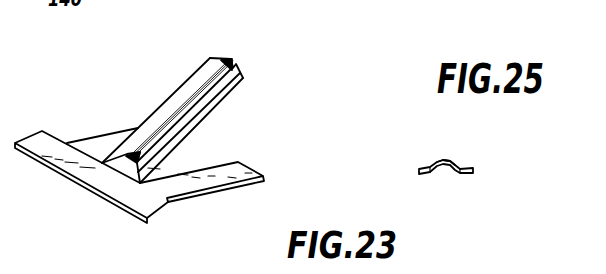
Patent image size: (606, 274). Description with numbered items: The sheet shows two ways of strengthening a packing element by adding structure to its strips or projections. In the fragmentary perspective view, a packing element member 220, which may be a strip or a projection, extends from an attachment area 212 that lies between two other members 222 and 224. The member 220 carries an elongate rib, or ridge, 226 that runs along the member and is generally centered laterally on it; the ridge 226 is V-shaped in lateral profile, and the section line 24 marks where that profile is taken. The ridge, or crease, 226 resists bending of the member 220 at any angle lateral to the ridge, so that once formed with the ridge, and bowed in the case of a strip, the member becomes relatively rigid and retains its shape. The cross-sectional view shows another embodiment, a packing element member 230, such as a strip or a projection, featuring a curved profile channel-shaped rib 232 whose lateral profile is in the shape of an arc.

In FIG. 23, the attachment area 212 is at (100, 183).
In FIG. 23, the packing element member 220 is at (208, 95).
In FIG. 23, the member 222 is at (232, 177).
In FIG. 23, the member 224 is at (103, 142).
In FIG. 23, the ridge 226 is at (222, 60).
In FIG. 23, the section line 24 is at (159, 64).
In FIG. 25, the packing element member 230 is at (468, 168).
In FIG. 25, the channel-shaped rib 232 is at (447, 162).